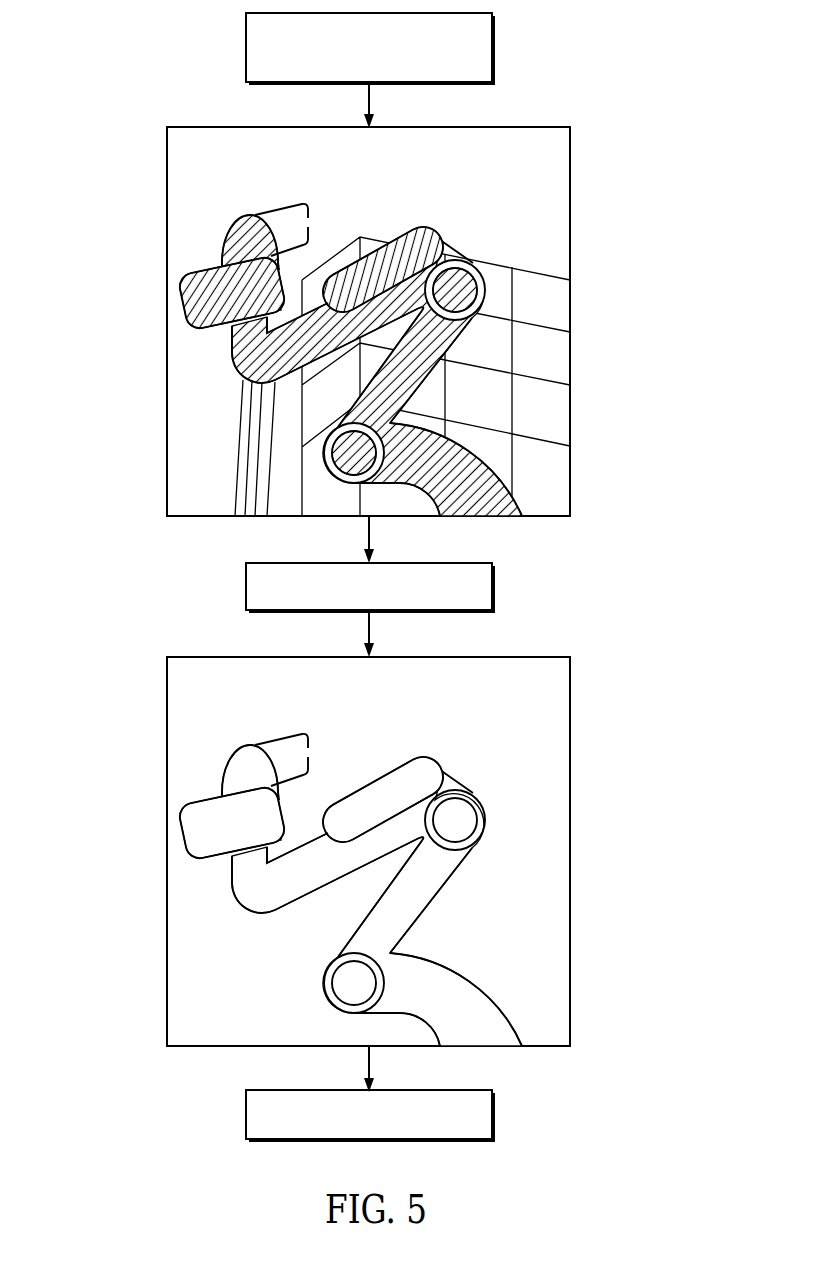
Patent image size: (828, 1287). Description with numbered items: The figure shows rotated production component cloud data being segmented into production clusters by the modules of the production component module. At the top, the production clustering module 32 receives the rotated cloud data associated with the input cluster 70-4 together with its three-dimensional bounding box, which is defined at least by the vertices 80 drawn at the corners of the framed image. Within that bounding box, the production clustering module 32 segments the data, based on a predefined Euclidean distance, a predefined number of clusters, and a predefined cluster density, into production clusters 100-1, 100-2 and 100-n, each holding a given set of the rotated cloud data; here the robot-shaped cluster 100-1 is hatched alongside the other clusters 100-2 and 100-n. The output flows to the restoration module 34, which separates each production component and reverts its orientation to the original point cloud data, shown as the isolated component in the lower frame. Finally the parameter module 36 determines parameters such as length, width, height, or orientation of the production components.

The production clustering module 32 is at (246, 38).
The restoration module 34 is at (246, 587).
The parameter module 36 is at (246, 1113).
The input cluster 70-4 is at (370, 308).
The vertices 80 is at (570, 127).
The production cluster 100-1 is at (470, 462).
The production cluster 100-2 is at (525, 346).
The production cluster 100-n is at (224, 432).